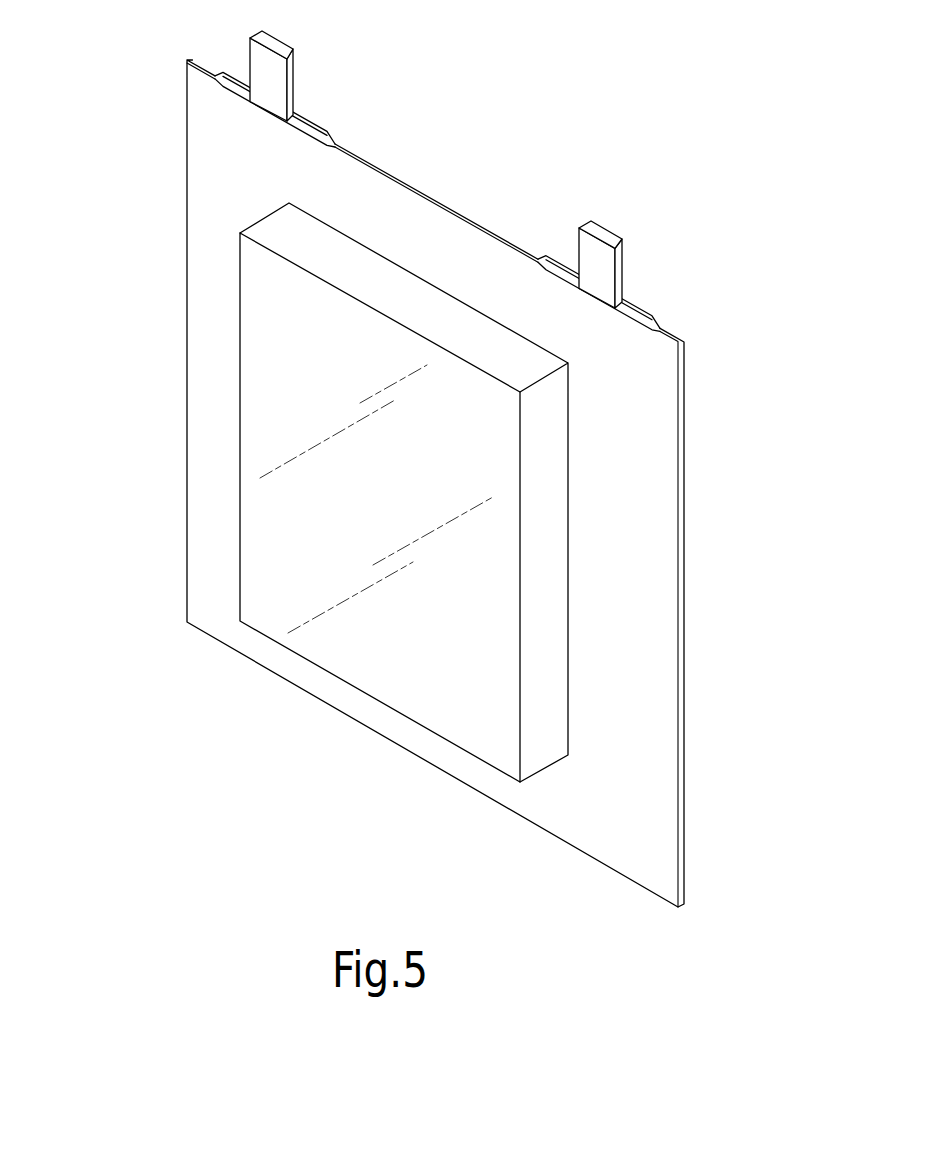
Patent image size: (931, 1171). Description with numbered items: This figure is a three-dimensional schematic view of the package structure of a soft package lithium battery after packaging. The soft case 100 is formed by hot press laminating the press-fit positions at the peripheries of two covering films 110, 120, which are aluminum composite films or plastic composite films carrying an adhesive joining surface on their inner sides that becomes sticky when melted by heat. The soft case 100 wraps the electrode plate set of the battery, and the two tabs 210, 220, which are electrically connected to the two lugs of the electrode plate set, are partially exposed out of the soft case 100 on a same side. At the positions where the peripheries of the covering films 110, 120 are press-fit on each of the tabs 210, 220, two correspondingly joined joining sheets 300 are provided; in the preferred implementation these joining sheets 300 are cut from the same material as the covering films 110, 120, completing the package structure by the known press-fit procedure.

The soft case 100 is at (435, 457).
The covering film 110 is at (683, 593).
The covering film 120 is at (213, 493).
The tab 210 is at (267, 63).
The tab 220 is at (595, 253).
The joining sheet 300 is at (322, 127).